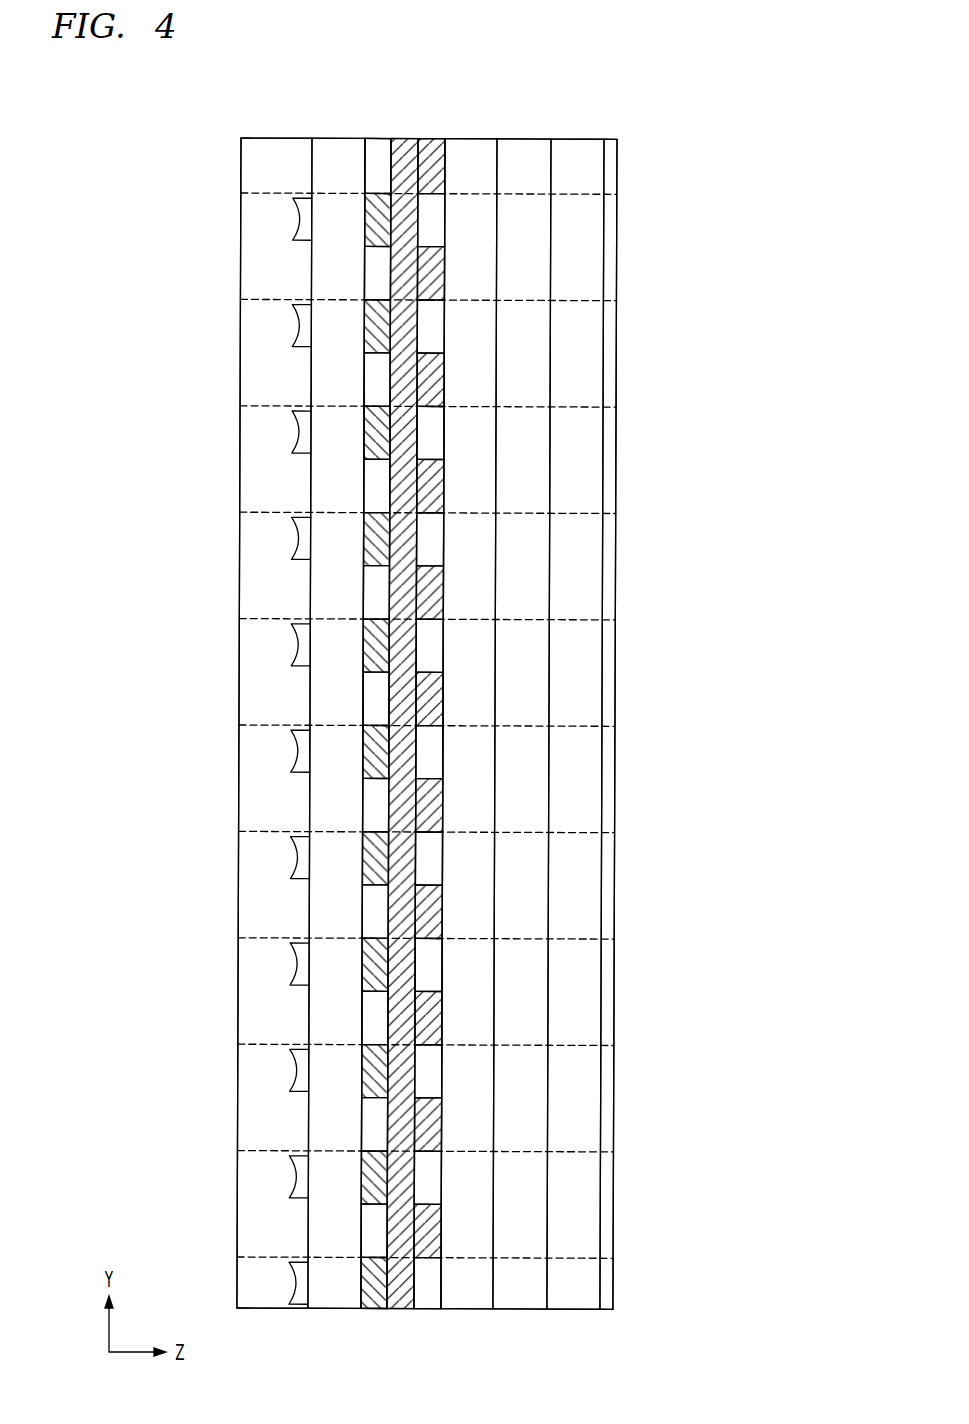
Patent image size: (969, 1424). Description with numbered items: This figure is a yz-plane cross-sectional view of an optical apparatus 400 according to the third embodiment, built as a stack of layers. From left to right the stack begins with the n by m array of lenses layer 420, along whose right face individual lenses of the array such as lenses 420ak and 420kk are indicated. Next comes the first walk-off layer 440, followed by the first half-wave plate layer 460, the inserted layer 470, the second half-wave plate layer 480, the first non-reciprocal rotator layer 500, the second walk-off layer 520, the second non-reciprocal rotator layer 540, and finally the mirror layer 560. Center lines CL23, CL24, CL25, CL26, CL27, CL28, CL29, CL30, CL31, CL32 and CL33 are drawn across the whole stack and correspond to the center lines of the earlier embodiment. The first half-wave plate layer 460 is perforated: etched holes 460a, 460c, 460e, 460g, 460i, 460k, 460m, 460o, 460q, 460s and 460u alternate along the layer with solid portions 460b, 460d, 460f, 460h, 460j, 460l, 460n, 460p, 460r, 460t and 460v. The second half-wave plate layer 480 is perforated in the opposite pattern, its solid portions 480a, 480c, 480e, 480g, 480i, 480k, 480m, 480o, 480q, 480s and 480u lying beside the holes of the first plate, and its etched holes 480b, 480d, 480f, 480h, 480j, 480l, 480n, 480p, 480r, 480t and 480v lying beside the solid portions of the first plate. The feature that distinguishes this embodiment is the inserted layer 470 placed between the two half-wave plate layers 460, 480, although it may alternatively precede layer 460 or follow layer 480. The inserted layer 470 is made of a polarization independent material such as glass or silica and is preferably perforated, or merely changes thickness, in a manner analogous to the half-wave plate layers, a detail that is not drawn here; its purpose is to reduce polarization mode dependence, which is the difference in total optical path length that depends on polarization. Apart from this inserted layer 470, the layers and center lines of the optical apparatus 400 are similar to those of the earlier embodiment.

The optical apparatus 400 is at (738, 91).
The n by m array of lenses layer 420 is at (278, 138).
The notch in substrate layer 420ak is at (298, 221).
The notch in substrate layer 420kk is at (298, 1285).
The first walk-off layer 440 is at (337, 138).
The first half-wave plate layer 460 is at (369, 138).
The etched hole 460a is at (379, 138).
The solid portion 460b is at (365, 220).
The etched hole 460c is at (365, 273).
The solid portion 460d is at (365, 326).
The etched hole 460e is at (365, 379).
The solid portion 460f is at (365, 433).
The etched hole 460g is at (365, 486).
The solid portion 460h is at (365, 539).
The etched hole 460i is at (365, 592).
The solid portion 460j is at (365, 646).
The etched hole 460k is at (365, 699).
The solid portion 460l is at (365, 752).
The etched hole 460m is at (365, 805).
The solid portion 460n is at (365, 858).
The etched hole 460o is at (365, 911).
The solid portion 460p is at (365, 965).
The etched hole 460q is at (365, 1018).
The solid portion 460r is at (365, 1071).
The etched hole 460s is at (365, 1124).
The solid portion 460t is at (365, 1178).
The etched hole 460u is at (365, 1231).
The solid portion 460v is at (365, 1284).
The inserted layer 470 is at (405, 138).
The second half-wave plate layer 480 is at (424, 138).
The solid portion 480a is at (441, 138).
The etched hole 480b is at (445, 220).
The solid portion 480c is at (445, 273).
The etched hole 480d is at (445, 326).
The solid portion 480e is at (445, 379).
The etched hole 480f is at (445, 433).
The solid portion 480g is at (445, 486).
The etched hole 480h is at (445, 539).
The solid portion 480i is at (445, 592).
The etched hole 480j is at (445, 646).
The solid portion 480k is at (445, 699).
The etched hole 480l is at (445, 752).
The solid portion 480m is at (445, 805).
The etched hole 480n is at (445, 858).
The solid portion 480o is at (445, 911).
The etched hole 480p is at (445, 965).
The solid portion 480q is at (445, 1018).
The etched hole 480r is at (445, 1071).
The solid portion 480s is at (445, 1124).
The etched hole 480t is at (445, 1178).
The solid portion 480u is at (445, 1231).
The etched hole 480v is at (445, 1284).
The first non-reciprocal rotator layer 500 is at (473, 138).
The second walk-off layer 520 is at (525, 138).
The second non-reciprocal rotator layer 540 is at (578, 138).
The mirror layer 560 is at (617, 138).
The center line CL23 is at (257, 192).
The center line CL24 is at (257, 298).
The center line CL25 is at (257, 405).
The center line CL26 is at (257, 511).
The center line CL27 is at (257, 618).
The center line CL28 is at (257, 724).
The center line CL29 is at (257, 830).
The center line CL30 is at (257, 937).
The center line CL31 is at (257, 1043).
The center line CL32 is at (257, 1150).
The center line CL33 is at (257, 1256).